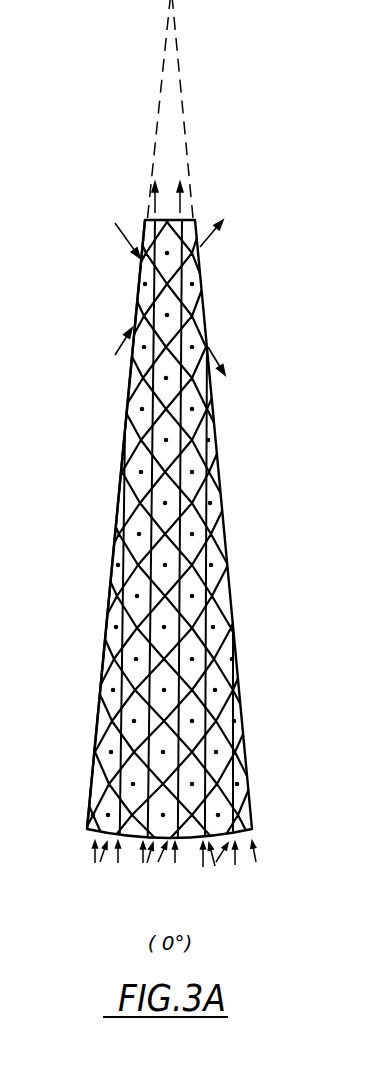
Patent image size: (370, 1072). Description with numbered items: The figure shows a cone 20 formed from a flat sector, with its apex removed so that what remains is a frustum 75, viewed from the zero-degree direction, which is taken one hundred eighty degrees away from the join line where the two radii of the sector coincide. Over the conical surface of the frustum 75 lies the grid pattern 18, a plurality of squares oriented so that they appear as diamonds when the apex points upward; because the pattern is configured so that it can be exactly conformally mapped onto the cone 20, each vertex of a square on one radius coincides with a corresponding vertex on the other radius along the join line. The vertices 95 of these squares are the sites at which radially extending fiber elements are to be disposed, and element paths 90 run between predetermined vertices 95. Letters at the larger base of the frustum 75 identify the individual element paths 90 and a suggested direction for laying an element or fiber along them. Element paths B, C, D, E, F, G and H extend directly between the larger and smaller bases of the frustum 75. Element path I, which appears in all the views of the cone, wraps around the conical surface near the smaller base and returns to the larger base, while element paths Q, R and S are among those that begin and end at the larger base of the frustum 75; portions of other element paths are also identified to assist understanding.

The grid pattern 18 is at (197, 408).
The cone 20 is at (142, 287).
The frustum 75 is at (111, 575).
The element paths 90 is at (152, 373).
The vertices 95 is at (193, 345).
The element path I is at (120, 241).
The element path D is at (153, 203).
The element path E is at (193, 208).
The element path B is at (93, 863).
The element path C is at (118, 866).
The element path F is at (203, 870).
The element path G is at (237, 867).
The element path H is at (257, 856).
The element path Q is at (102, 863).
The element path R is at (148, 867).
The element path S is at (217, 866).